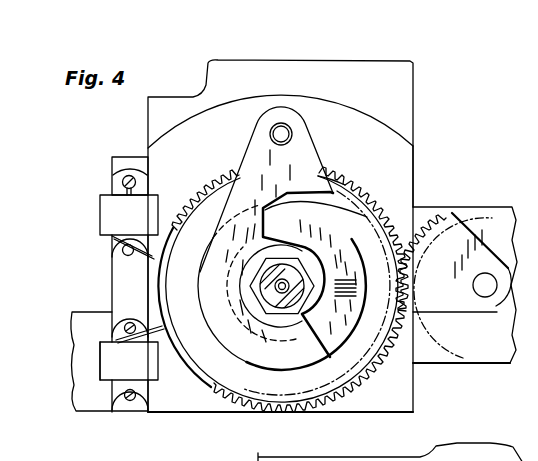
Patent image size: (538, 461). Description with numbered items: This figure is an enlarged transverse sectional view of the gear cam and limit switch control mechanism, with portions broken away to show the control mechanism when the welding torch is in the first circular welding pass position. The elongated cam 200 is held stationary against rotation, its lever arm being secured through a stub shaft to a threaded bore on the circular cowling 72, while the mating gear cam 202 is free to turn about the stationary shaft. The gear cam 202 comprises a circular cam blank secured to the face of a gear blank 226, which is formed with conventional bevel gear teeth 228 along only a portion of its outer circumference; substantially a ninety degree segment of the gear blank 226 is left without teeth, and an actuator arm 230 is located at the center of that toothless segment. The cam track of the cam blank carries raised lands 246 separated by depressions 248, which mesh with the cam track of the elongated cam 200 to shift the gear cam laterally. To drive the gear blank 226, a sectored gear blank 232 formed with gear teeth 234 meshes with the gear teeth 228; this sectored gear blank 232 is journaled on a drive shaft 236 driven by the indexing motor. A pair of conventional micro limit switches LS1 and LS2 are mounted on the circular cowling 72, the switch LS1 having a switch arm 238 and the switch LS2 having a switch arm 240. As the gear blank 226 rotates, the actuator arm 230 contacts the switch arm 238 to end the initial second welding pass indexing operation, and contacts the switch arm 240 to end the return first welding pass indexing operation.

The circular cowling 72 is at (362, 110).
The elongated cam 200 is at (312, 125).
The gear cam 202 is at (413, 152).
The gear blank 226 is at (221, 379).
The gear teeth 228 is at (337, 178).
The actuator arm 230 is at (160, 326).
The sectored gear blank 232 is at (495, 304).
The gear teeth 234 is at (421, 237).
The drive shaft 236 is at (485, 285).
The switch arm 238 is at (146, 341).
The switch arm 240 is at (112, 252).
The raised lands 246 is at (343, 253).
The depressions 248 is at (372, 384).
The limit switch LS1 is at (110, 380).
The limit switch LS2 is at (112, 221).